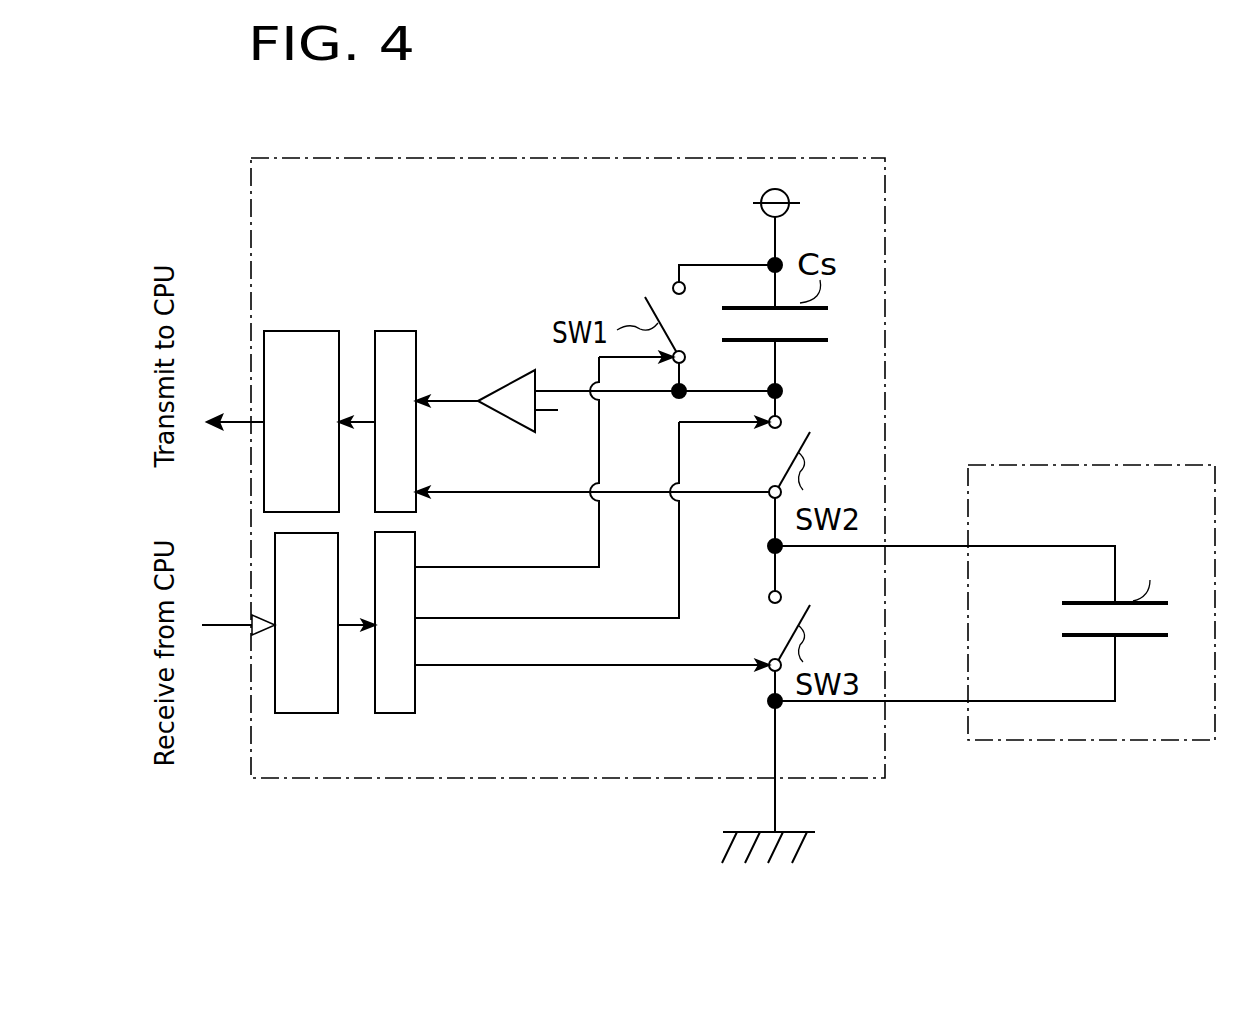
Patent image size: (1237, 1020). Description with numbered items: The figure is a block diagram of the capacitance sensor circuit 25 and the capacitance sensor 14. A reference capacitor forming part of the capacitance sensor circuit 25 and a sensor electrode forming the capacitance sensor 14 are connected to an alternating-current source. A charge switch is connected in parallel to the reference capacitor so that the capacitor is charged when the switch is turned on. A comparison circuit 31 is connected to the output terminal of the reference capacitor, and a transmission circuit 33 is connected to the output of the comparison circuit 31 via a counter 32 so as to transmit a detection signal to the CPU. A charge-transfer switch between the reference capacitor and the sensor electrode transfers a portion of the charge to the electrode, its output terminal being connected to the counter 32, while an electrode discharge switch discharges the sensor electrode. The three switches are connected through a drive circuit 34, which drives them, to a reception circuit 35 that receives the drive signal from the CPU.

The capacitance sensor circuit 25 is at (885, 241).
The capacitance sensor 14 is at (1125, 465).
The comparison circuit 31 is at (507, 422).
The counter 32 is at (392, 331).
The transmission circuit 33 is at (313, 331).
The drive circuit 34 is at (388, 713).
The reception circuit 35 is at (313, 713).